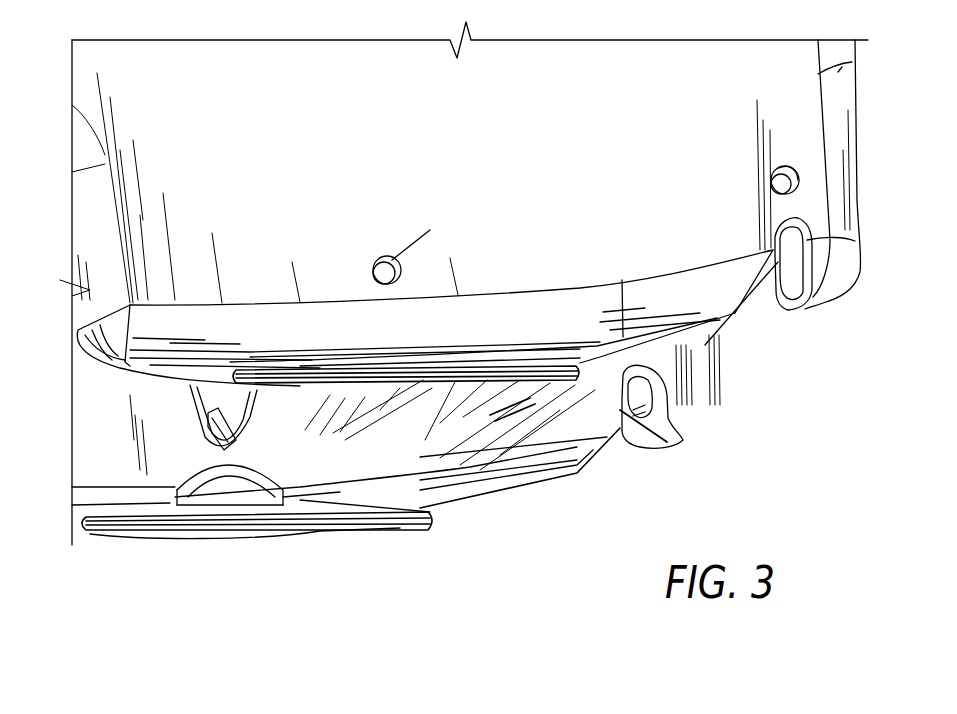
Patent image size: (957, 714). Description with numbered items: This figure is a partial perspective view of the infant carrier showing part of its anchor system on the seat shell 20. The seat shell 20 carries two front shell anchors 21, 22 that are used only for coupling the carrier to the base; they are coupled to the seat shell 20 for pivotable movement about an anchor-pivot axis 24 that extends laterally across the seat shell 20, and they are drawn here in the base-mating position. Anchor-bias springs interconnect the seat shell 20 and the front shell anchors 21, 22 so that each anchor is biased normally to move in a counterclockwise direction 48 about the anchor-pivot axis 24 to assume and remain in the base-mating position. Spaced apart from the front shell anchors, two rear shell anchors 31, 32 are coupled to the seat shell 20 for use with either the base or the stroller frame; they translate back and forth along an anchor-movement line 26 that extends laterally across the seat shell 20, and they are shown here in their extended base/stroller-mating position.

The seat shell 20 is at (692, 337).
The first front shell anchor 21 is at (777, 252).
The second front shell anchor 22 is at (620, 438).
The anchor-pivot axis 24 is at (427, 530).
The anchor-movement line 26 is at (118, 538).
The first rear shell anchor 31 is at (380, 284).
The second rear shell anchor 32 is at (236, 470).
The counterclockwise direction 48 is at (800, 167).